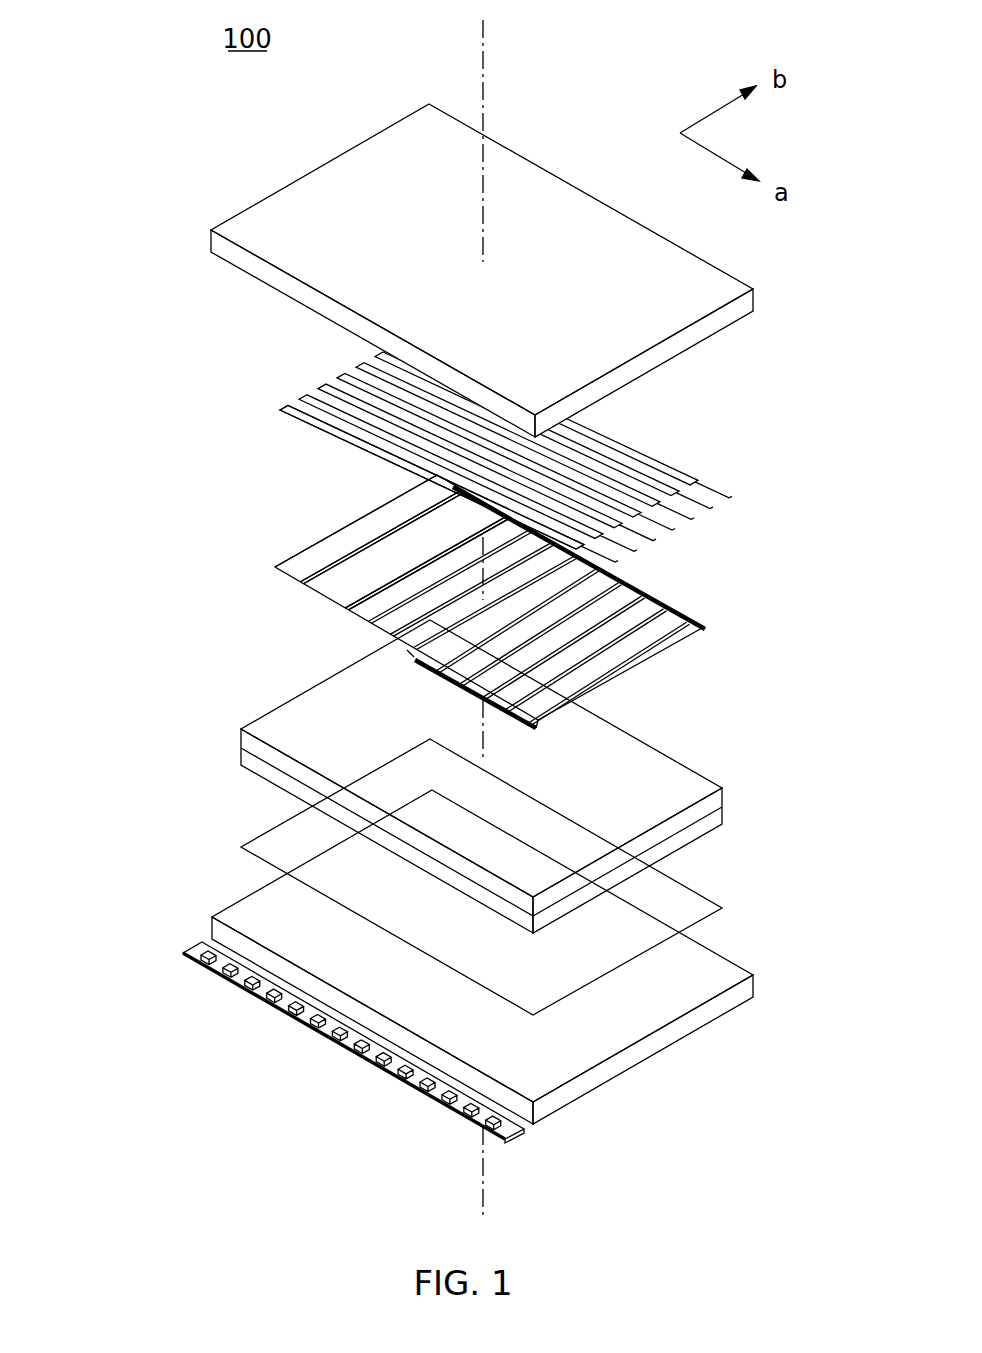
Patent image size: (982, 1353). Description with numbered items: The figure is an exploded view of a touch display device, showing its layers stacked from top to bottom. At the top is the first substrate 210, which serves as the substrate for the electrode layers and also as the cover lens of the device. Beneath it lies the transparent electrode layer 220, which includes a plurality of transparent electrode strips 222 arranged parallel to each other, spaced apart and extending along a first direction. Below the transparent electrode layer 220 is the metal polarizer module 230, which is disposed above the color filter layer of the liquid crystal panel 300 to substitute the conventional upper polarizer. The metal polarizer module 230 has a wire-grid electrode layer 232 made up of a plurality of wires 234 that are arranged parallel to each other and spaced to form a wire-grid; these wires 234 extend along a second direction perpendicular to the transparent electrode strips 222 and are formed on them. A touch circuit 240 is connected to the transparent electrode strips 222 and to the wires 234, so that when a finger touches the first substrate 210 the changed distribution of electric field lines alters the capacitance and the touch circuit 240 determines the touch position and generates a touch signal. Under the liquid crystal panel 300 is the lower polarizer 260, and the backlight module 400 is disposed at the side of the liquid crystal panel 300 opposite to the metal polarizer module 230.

The first substrate 210 is at (211, 240).
The transparent electrode layer 220 is at (273, 404).
The transparent electrode strips 222 is at (285, 417).
The metal polarizer module 230 is at (286, 548).
The wire-grid electrode layer 232 is at (340, 584).
The wires 234 is at (337, 585).
The touch circuit 240 is at (538, 730).
The liquid crystal panel 300 is at (241, 748).
The lower polarizer 260 is at (268, 831).
The backlight module 400 is at (205, 940).